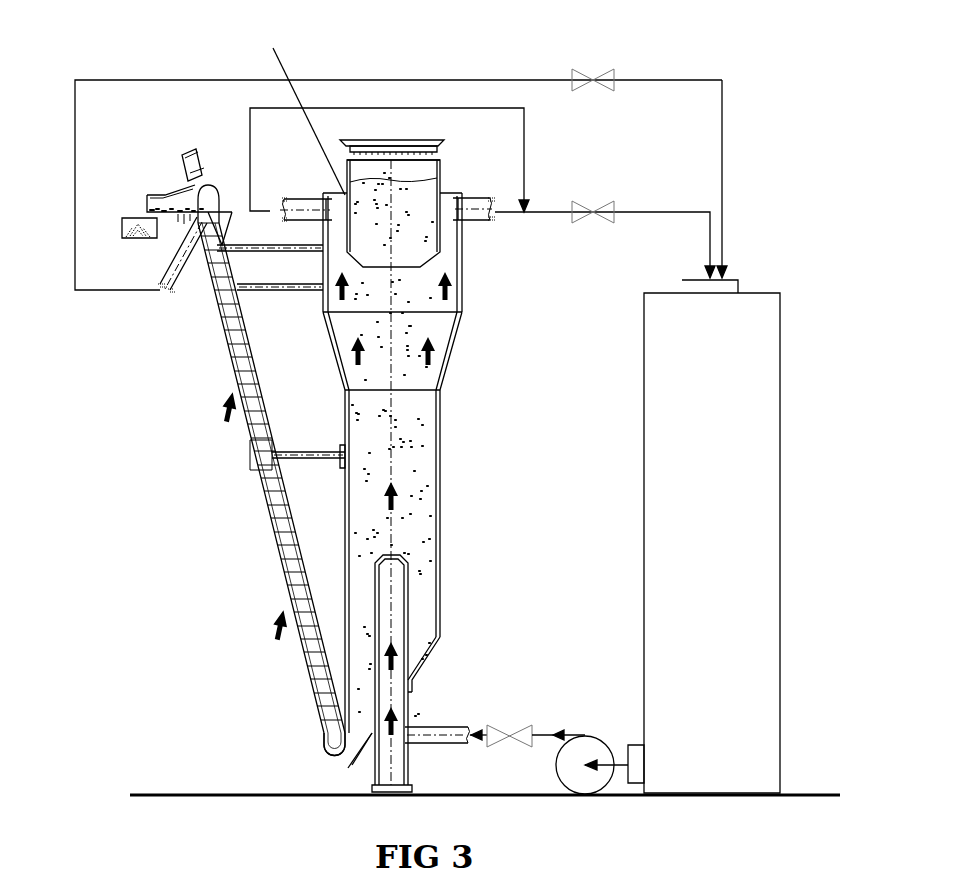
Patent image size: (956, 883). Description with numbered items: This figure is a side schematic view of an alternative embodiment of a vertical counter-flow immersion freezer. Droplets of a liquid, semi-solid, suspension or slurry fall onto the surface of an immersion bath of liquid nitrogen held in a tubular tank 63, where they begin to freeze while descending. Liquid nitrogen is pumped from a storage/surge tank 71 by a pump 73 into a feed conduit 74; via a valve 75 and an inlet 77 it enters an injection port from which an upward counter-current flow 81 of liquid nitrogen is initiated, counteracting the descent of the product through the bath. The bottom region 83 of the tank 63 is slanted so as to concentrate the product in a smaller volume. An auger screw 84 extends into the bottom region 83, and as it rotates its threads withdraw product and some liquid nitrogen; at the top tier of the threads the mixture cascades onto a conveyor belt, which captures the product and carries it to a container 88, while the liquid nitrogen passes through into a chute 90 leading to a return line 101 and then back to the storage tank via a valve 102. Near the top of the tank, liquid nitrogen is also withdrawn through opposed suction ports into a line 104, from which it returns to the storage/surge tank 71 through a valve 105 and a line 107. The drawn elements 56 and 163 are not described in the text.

The return line 101 is at (100, 80).
The valve 102 is at (578, 82).
The line 104 is at (252, 147).
The valve 105 is at (580, 214).
The line 107 is at (657, 210).
The liquid container / sprinkler 56 is at (378, 142).
The pipe connection 163 is at (310, 208).
The tubular tank 63 is at (437, 455).
The upward counter-current flow 81 is at (397, 621).
The bottom region 83 is at (360, 733).
The auger screw 84 is at (278, 558).
The container 88 is at (123, 238).
The chute 90 is at (175, 285).
The inlet 77 is at (428, 733).
The valve 75 is at (495, 732).
The feed conduit 74 is at (543, 735).
The pump 73 is at (597, 750).
The storage/surge tank 71 is at (755, 410).